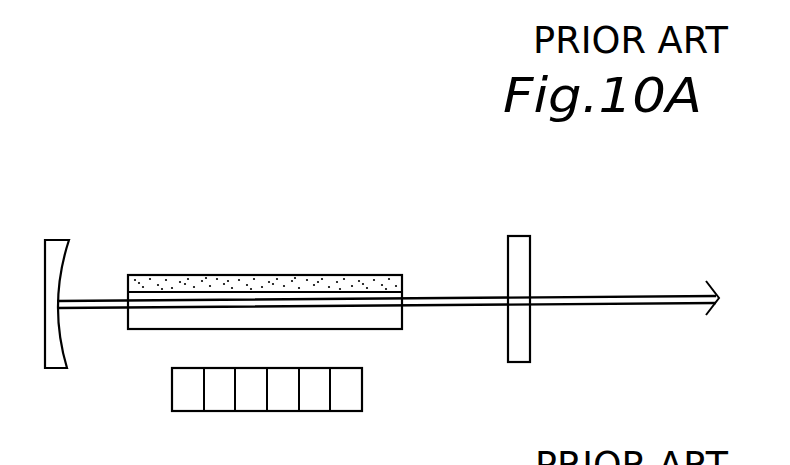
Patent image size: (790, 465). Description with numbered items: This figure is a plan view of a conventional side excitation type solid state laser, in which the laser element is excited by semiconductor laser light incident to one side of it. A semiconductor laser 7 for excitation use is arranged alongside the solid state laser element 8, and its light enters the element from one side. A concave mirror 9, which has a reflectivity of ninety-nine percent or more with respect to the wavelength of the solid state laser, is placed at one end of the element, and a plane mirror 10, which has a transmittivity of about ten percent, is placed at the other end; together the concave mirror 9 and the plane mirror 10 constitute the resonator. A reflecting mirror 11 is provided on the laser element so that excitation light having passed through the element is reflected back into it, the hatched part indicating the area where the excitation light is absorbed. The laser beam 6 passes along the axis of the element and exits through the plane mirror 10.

The laser beam 6 is at (598, 304).
The semiconductor laser 7 is at (222, 411).
The solid state laser element 8 is at (135, 330).
The concave mirror 9 is at (66, 240).
The plane mirror 10 is at (518, 236).
The reflecting mirror 11 is at (271, 213).